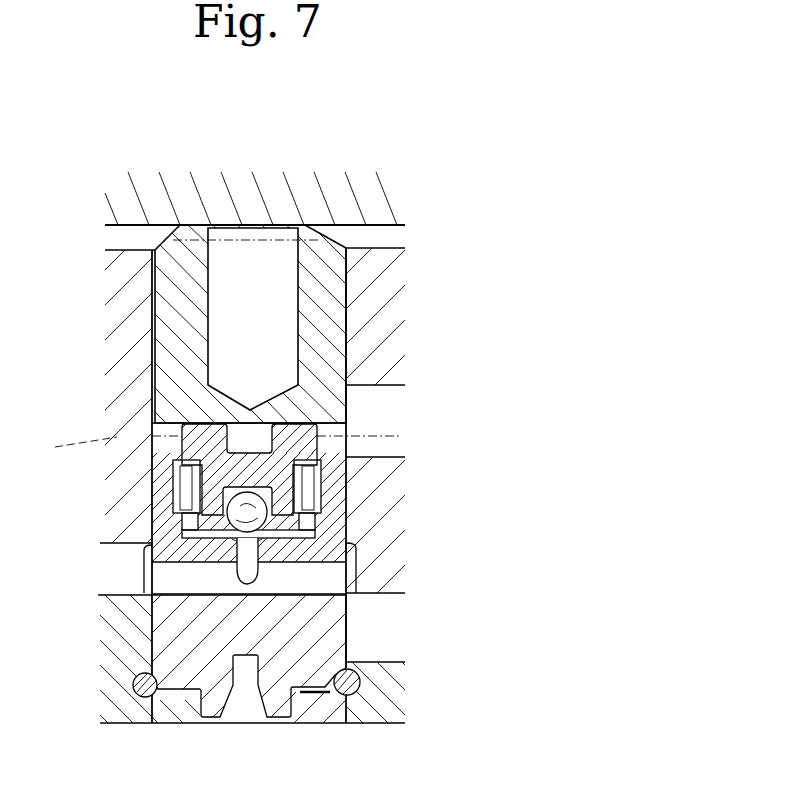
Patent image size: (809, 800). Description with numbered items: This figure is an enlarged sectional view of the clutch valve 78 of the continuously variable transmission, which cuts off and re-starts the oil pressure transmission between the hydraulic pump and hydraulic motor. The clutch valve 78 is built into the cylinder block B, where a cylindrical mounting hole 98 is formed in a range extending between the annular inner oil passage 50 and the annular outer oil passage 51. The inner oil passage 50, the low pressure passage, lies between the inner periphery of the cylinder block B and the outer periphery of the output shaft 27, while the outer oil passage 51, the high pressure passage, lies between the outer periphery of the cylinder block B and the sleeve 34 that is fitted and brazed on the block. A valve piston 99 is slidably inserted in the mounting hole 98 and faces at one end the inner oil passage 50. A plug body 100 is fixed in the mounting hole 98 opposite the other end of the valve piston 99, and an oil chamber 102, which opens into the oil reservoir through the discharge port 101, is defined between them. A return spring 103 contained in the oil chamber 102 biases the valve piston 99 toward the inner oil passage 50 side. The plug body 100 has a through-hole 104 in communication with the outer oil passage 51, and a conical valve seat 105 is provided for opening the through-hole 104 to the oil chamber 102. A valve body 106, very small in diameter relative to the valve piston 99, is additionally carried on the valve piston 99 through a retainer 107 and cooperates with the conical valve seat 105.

The output shaft 27 is at (223, 187).
The clutch valve 78 is at (340, 203).
The inner oil passage 50 is at (218, 248).
The mounting hole 98 is at (152, 322).
The valve piston 99 is at (348, 330).
The discharge port 101 is at (387, 397).
The cylinder block B is at (215, 447).
The oil chamber 102 is at (340, 428).
The return spring 103 is at (184, 499).
The retainer 107 is at (344, 512).
The outer oil passage 51 is at (113, 565).
The through-hole 104 is at (357, 568).
The conical valve seat 105 is at (240, 565).
The valve body 106 is at (270, 540).
The plug body 100 is at (328, 633).
The sleeve 34 is at (117, 652).